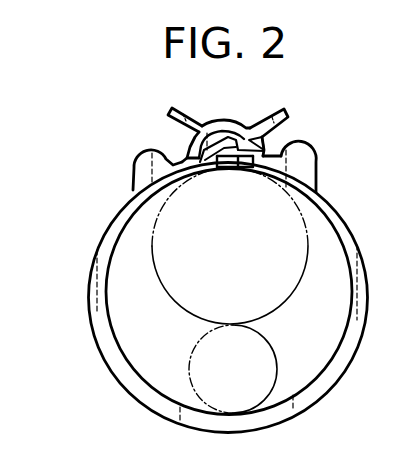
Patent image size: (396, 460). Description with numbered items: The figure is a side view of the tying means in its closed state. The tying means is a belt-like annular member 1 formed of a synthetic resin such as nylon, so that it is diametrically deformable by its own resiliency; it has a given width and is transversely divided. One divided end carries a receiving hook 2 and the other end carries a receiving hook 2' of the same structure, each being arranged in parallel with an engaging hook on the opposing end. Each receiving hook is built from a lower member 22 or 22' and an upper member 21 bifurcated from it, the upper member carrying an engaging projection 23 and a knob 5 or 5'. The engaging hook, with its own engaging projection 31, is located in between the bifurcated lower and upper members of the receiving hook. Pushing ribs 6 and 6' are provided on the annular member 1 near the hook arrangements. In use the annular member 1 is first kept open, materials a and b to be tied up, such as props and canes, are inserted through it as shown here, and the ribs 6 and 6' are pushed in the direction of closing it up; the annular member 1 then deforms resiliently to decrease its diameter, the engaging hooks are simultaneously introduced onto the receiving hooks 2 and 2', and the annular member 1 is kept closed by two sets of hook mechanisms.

The annular member 1 is at (98, 302).
The receiving hook 2 is at (186, 135).
The receiving hook 2' is at (276, 159).
The knob 5 is at (286, 104).
The knob 5' is at (158, 100).
The pushing rib 6 is at (120, 172).
The pushing rib 6' is at (331, 176).
The upper member 21 is at (217, 129).
The lower member 22 is at (204, 195).
The lower member 22' is at (260, 197).
The engaging projection 23 is at (266, 146).
The engaging projection 31 is at (228, 170).
The material to be tied up a is at (153, 258).
The material to be tied up b is at (192, 374).